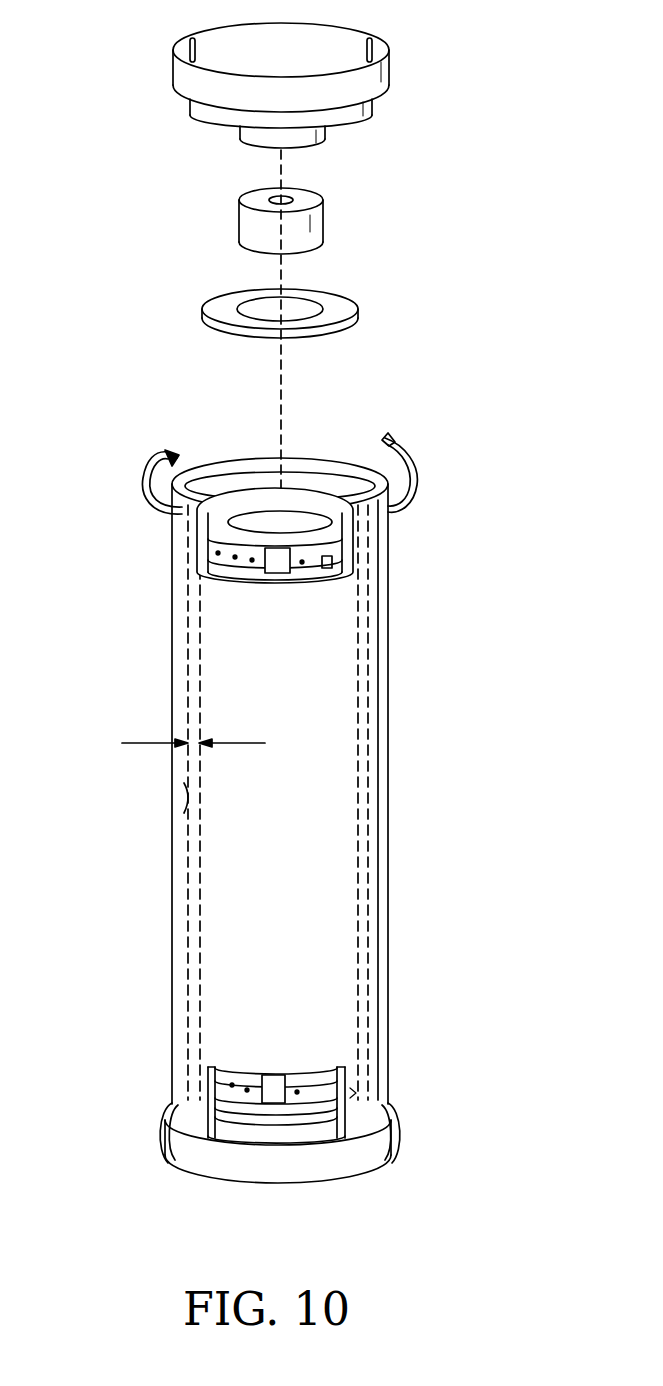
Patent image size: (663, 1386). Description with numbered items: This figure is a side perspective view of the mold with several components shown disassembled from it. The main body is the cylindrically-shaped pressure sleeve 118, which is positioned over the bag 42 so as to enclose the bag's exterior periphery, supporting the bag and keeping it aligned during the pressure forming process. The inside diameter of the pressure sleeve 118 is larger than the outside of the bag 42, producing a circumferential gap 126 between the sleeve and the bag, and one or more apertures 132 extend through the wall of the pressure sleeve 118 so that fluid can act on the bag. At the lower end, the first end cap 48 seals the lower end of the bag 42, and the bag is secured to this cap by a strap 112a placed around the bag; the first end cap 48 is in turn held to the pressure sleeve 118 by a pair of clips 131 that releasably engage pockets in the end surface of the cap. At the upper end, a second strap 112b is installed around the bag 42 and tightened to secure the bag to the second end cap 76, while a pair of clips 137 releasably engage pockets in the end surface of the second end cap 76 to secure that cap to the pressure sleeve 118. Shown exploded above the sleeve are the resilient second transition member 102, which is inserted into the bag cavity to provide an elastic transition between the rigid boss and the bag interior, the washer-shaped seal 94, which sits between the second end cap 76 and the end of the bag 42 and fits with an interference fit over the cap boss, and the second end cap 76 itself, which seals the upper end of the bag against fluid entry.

The second end cap 76 is at (355, 33).
The second transition member 102 is at (324, 219).
The washer-shaped seal 94 is at (359, 313).
The clips 137 is at (141, 485).
The bag 42 is at (359, 599).
The second strap 112b is at (332, 571).
The circumferential gap 126 is at (136, 741).
The apertures 132 is at (185, 795).
The pressure sleeve 118 is at (389, 807).
The strap 112a is at (317, 1082).
The clips 131 is at (160, 1124).
The first end cap 48 is at (330, 1198).